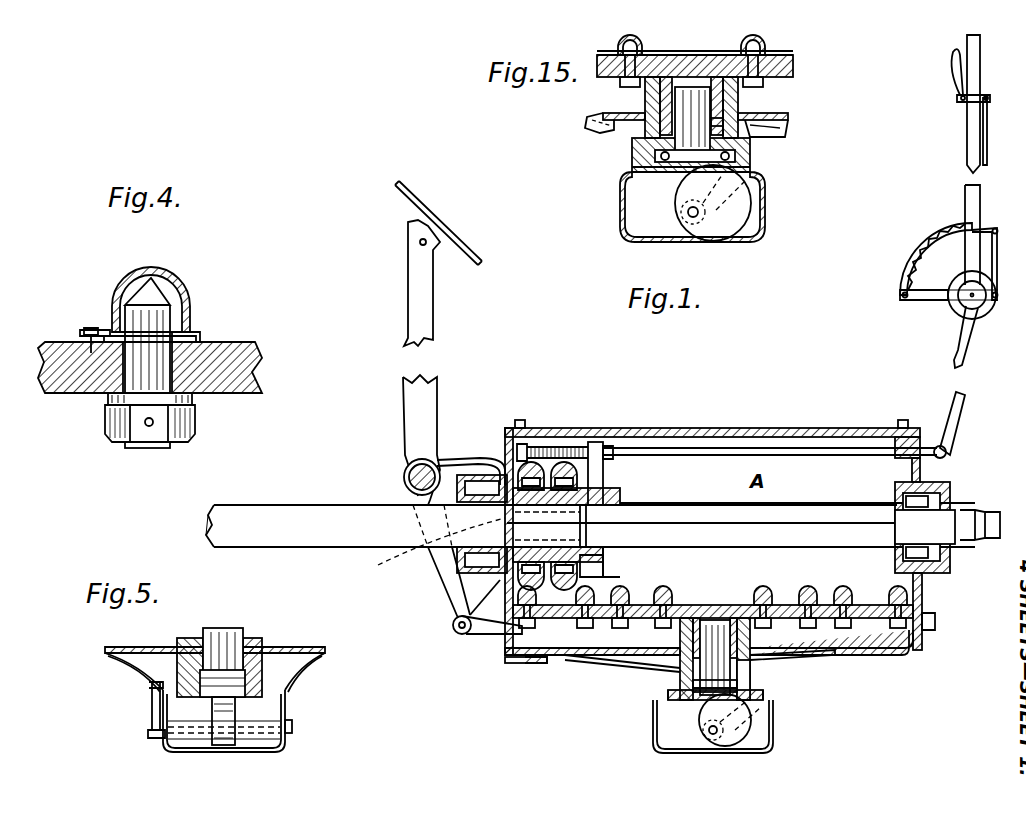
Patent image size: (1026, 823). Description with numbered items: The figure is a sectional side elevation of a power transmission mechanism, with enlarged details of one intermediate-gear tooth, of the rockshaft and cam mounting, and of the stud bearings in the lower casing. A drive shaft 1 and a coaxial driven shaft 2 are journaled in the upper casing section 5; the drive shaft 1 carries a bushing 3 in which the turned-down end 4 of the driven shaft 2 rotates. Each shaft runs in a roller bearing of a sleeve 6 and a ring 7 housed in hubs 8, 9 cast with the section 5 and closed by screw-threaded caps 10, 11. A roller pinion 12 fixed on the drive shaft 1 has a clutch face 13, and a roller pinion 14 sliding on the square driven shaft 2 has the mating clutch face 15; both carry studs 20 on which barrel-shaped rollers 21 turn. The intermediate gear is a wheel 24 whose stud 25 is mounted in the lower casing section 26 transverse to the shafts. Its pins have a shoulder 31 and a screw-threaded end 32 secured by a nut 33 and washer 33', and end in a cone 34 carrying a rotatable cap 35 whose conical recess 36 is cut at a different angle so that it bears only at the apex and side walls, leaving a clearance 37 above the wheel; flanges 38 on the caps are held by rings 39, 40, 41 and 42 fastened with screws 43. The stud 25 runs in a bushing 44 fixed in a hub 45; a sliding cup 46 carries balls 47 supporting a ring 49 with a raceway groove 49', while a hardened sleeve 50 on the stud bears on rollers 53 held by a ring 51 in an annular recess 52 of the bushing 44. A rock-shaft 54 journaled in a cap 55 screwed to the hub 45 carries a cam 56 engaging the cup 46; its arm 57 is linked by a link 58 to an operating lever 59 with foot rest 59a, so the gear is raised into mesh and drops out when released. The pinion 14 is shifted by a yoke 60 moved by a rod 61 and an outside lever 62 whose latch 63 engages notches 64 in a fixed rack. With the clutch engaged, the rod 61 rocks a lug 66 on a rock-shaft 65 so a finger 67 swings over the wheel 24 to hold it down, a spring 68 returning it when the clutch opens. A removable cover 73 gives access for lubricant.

In FIG. 1, the drive shaft 1 is at (285, 522).
In FIG. 1, the driven shaft 2 is at (815, 518).
In FIG. 1, the bushing 3 is at (433, 552).
In FIG. 1, the turned-down end 4 is at (702, 526).
In FIG. 1, the upper section of casing 5 is at (925, 470).
In FIG. 1, the sleeve 6 is at (945, 498).
In FIG. 1, the ring 7 is at (925, 583).
In FIG. 1, the hub 8 is at (482, 583).
In FIG. 1, the hub 9 is at (950, 565).
In FIG. 1, the screw-threaded cap 10 is at (457, 562).
In FIG. 1, the screw-threaded cap 11 is at (958, 540).
In FIG. 1, the roller pinion 12 is at (462, 625).
In FIG. 1, the clutch face 13 is at (585, 572).
In FIG. 1, the roller pinion 14 is at (578, 490).
In FIG. 1, the clutch face 15 is at (625, 563).
In FIG. 1, the stud 20 is at (498, 460).
In FIG. 1, the roller 21 is at (530, 472).
In FIG. 4, the wheel 24 is at (250, 381).
In FIG. 15, the wheel 24 is at (793, 66).
In FIG. 1, the wheel 24 is at (715, 607).
In FIG. 5, the stud 25 is at (222, 648).
In FIG. 15, the stud 25 is at (700, 112).
In FIG. 5, the lower section of casing 26 is at (300, 647).
In FIG. 15, the lower section of casing 26 is at (603, 115).
In FIG. 1, the lower section of casing 26 is at (860, 656).
In FIG. 4, the shoulder 31 is at (197, 337).
In FIG. 1, the shoulder 31 is at (628, 622).
In FIG. 4, the screw-threaded end 32 is at (140, 449).
In FIG. 1, the screw-threaded end 32 is at (592, 622).
In FIG. 4, the nut 33 is at (120, 438).
In FIG. 15, the nut 33 is at (676, 87).
In FIG. 1, the nut 33 is at (740, 643).
In FIG. 1, the washer 33' is at (862, 632).
In FIG. 4, the cone 34 is at (156, 306).
In FIG. 15, the cone 34 is at (618, 50).
In FIG. 4, the cap 35 is at (175, 283).
In FIG. 15, the cap 35 is at (765, 46).
In FIG. 1, the cap 35 is at (660, 582).
In FIG. 4, the conical recess 36 is at (113, 300).
In FIG. 4, the clearance 37 is at (205, 342).
In FIG. 4, the flange 38 is at (92, 328).
In FIG. 1, the ring 39 is at (682, 602).
In FIG. 15, the ring 40 is at (705, 51).
In FIG. 1, the ring 40 is at (808, 590).
In FIG. 1, the ring 41 is at (840, 590).
In FIG. 4, the ring 42 is at (187, 334).
In FIG. 1, the ring 42 is at (878, 600).
In FIG. 4, the screws 43 is at (82, 332).
In FIG. 5, the bushing 44 is at (255, 640).
In FIG. 15, the bushing 44 is at (632, 148).
In FIG. 1, the bushing 44 is at (682, 680).
In FIG. 5, the hub 45 is at (275, 670).
In FIG. 15, the hub 45 is at (750, 142).
In FIG. 1, the hub 45 is at (680, 690).
In FIG. 5, the cup 46 is at (215, 683).
In FIG. 15, the cup 46 is at (750, 162).
In FIG. 1, the cup 46 is at (700, 700).
In FIG. 15, the balls 47 is at (632, 168).
In FIG. 1, the balls 47 is at (668, 695).
In FIG. 15, the ring 49 is at (660, 174).
In FIG. 1, the ring 49 is at (753, 692).
In FIG. 15, the circumferential groove 49' is at (767, 173).
In FIG. 15, the hardened sleeve 50 is at (740, 112).
In FIG. 1, the hardened sleeve 50 is at (792, 660).
In FIG. 1, the ring 51 is at (770, 626).
In FIG. 15, the annular recess 52 is at (788, 115).
In FIG. 1, the annular recess 52 is at (813, 626).
In FIG. 15, the rollers 53 is at (664, 88).
In FIG. 1, the rollers 53 is at (766, 588).
In FIG. 5, the rock-shaft 54 is at (292, 728).
In FIG. 15, the rock-shaft 54 is at (696, 216).
In FIG. 1, the rock-shaft 54 is at (712, 735).
In FIG. 5, the cap 55 is at (285, 712).
In FIG. 15, the cap 55 is at (625, 236).
In FIG. 1, the cap 55 is at (770, 745).
In FIG. 5, the cam 56 is at (224, 717).
In FIG. 15, the cam 56 is at (710, 208).
In FIG. 1, the cam 56 is at (730, 740).
In FIG. 5, the crank or arm 57 is at (152, 706).
In FIG. 15, the link 58 is at (590, 127).
In FIG. 1, the link 58 is at (582, 660).
In FIG. 1, the operating lever 59 is at (417, 437).
In FIG. 1, the foot rest 59a is at (458, 243).
In FIG. 1, the yoke 60 is at (600, 450).
In FIG. 1, the rod 61 is at (792, 440).
In FIG. 1, the operating lever 62 is at (962, 330).
In FIG. 1, the hand-operated latch 63 is at (967, 145).
In FIG. 1, the notches 64 is at (930, 235).
In FIG. 1, the rock-shaft 65 is at (482, 478).
In FIG. 1, the lug or ear 66 is at (538, 448).
In FIG. 1, the finger 67 is at (466, 634).
In FIG. 1, the spring 68 is at (540, 665).
In FIG. 1, the removable cover 73 is at (738, 428).